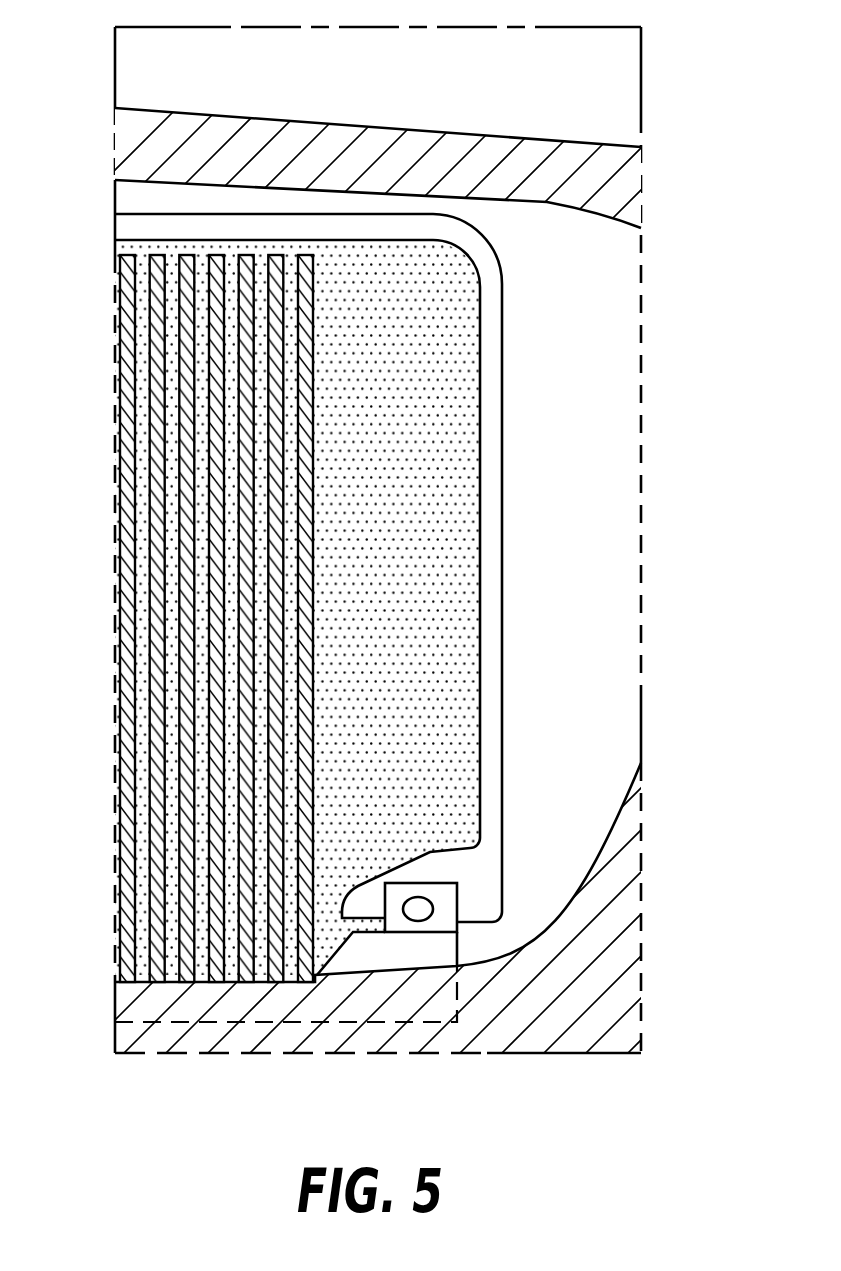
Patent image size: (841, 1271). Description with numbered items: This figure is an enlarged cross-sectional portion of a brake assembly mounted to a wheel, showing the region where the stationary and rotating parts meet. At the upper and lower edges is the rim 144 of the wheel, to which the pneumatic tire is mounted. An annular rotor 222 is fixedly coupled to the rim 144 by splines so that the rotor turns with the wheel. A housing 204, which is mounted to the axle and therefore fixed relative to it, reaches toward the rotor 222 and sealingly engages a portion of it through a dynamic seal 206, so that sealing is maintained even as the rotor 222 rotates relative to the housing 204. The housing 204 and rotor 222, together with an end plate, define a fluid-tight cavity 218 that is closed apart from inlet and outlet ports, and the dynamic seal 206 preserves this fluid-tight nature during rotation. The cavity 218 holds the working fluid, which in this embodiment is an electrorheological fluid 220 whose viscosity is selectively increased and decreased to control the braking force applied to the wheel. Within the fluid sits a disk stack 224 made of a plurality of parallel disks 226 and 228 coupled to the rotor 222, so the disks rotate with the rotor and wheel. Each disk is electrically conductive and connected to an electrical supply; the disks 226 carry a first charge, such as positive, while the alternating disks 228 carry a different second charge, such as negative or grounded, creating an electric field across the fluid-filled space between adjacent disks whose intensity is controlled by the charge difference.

The rim 144 is at (592, 217).
The housing 204 is at (502, 423).
The dynamic seal 206 is at (457, 904).
The fluid-tight cavity 218 is at (404, 584).
The electrorheological fluid 220 is at (428, 385).
The annular rotor 222 is at (458, 944).
The disk stack 224 is at (182, 690).
The disks 226 is at (157, 984).
The disks 228 is at (127, 984).